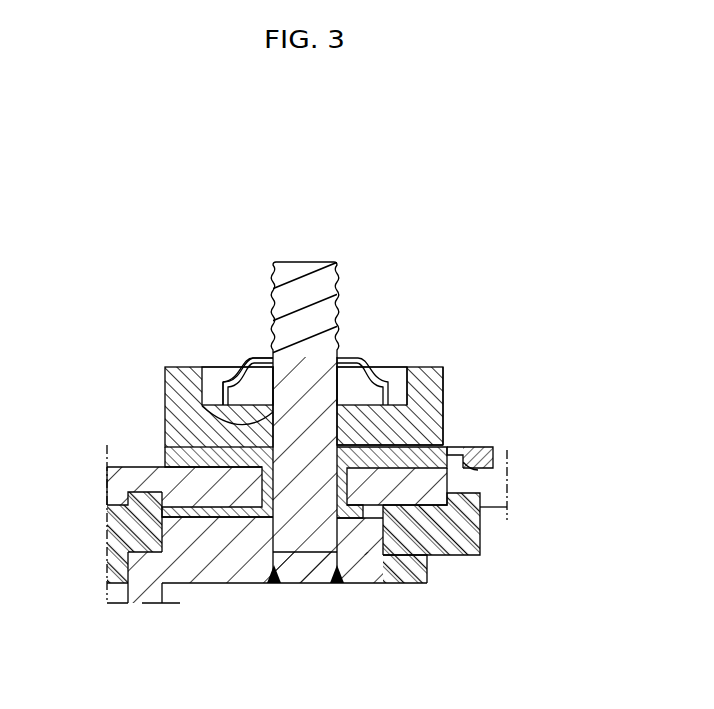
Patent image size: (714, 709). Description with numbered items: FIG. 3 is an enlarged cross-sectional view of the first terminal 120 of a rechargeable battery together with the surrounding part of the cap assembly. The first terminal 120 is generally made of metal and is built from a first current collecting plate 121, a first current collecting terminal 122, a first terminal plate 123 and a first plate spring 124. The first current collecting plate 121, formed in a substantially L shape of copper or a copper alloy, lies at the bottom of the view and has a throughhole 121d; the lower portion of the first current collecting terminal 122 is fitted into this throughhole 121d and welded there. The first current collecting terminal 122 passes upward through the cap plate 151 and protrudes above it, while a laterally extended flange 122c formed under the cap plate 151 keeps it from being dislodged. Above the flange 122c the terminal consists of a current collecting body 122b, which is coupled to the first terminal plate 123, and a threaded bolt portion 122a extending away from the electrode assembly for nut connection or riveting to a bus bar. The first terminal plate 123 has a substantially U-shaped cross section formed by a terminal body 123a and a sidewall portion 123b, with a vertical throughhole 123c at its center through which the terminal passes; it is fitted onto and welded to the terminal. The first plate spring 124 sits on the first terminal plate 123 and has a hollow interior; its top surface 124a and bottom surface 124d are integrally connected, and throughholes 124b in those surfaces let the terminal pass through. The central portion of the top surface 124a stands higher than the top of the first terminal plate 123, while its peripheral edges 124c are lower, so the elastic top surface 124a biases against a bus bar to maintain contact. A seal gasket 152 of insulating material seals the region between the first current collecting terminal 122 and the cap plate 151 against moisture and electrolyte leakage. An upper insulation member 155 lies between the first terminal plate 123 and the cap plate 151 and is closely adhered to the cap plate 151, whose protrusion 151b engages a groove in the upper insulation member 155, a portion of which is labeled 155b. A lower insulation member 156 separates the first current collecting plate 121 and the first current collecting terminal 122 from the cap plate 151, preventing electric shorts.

The first terminal 120 is at (257, 200).
The first current collecting plate 121 is at (118, 594).
The throughhole 121d is at (285, 583).
The first current collecting terminal 122 is at (326, 250).
The bolt portion 122a is at (338, 303).
The current collecting body 122b is at (340, 385).
The flange 122c is at (197, 538).
The first terminal plate 123 is at (155, 413).
The terminal body 123a is at (382, 428).
The sidewall portion 123b is at (410, 405).
The throughhole 123c is at (438, 378).
The first plate spring 124 is at (153, 213).
The top surface 124a is at (253, 358).
The throughhole 124b is at (282, 357).
The peripheral edges 124c is at (238, 368).
The bottom surface 124d is at (218, 410).
The cap plate 151 is at (107, 482).
The protrusion 151b is at (456, 447).
The seal gasket 152 is at (347, 480).
The upper insulation member 155 is at (165, 452).
The bushing hook 155b is at (466, 462).
The lower insulation member 156 is at (472, 537).